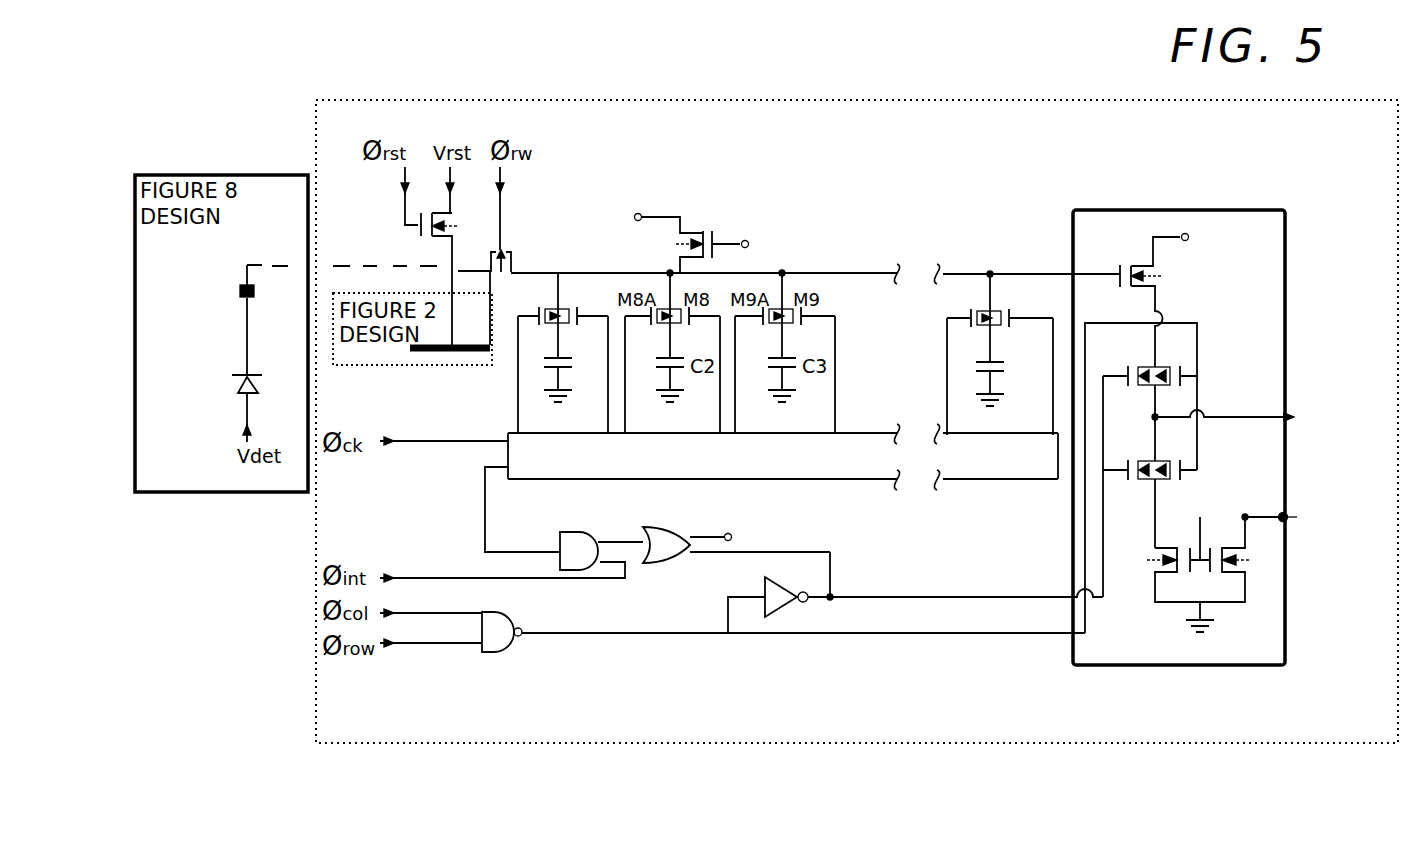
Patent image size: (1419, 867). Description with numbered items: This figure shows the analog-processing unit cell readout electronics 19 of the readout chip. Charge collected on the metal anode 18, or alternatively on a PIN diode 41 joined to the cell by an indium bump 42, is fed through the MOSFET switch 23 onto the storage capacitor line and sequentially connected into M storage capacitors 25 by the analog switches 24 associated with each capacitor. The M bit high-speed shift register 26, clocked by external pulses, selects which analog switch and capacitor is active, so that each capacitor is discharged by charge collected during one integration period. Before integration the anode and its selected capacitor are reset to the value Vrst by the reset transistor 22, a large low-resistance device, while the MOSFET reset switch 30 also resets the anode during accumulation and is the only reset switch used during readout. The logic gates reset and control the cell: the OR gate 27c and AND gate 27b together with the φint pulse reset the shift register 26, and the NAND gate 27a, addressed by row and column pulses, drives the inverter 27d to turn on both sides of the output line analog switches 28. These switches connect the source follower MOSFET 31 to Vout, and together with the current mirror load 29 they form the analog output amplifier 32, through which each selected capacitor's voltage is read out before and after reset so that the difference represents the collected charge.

The anode 18 is at (410, 356).
The analog-processing unit cell readout electronics 19 is at (462, 748).
The reset transistor M1 22 is at (466, 219).
The MOSFET switch M10 23 is at (533, 240).
The analog switches 24 is at (967, 331).
The storage capacitors 25 is at (967, 380).
The M bit high-speed shift register 26 is at (855, 483).
The NAND gate 27a is at (520, 648).
The AND gate 27b is at (599, 573).
The OR gate 27c is at (676, 567).
The inverter 27d is at (763, 617).
The analog switches 28 is at (1180, 390).
The current mirror load 29 is at (1255, 606).
The MOSFET reset switch 30 is at (700, 221).
The source follower MOSFET 31 is at (1130, 250).
The analog output amplifier 32 is at (1075, 664).
The PIN diode 41 is at (232, 390).
The indium bump 42 is at (236, 298).